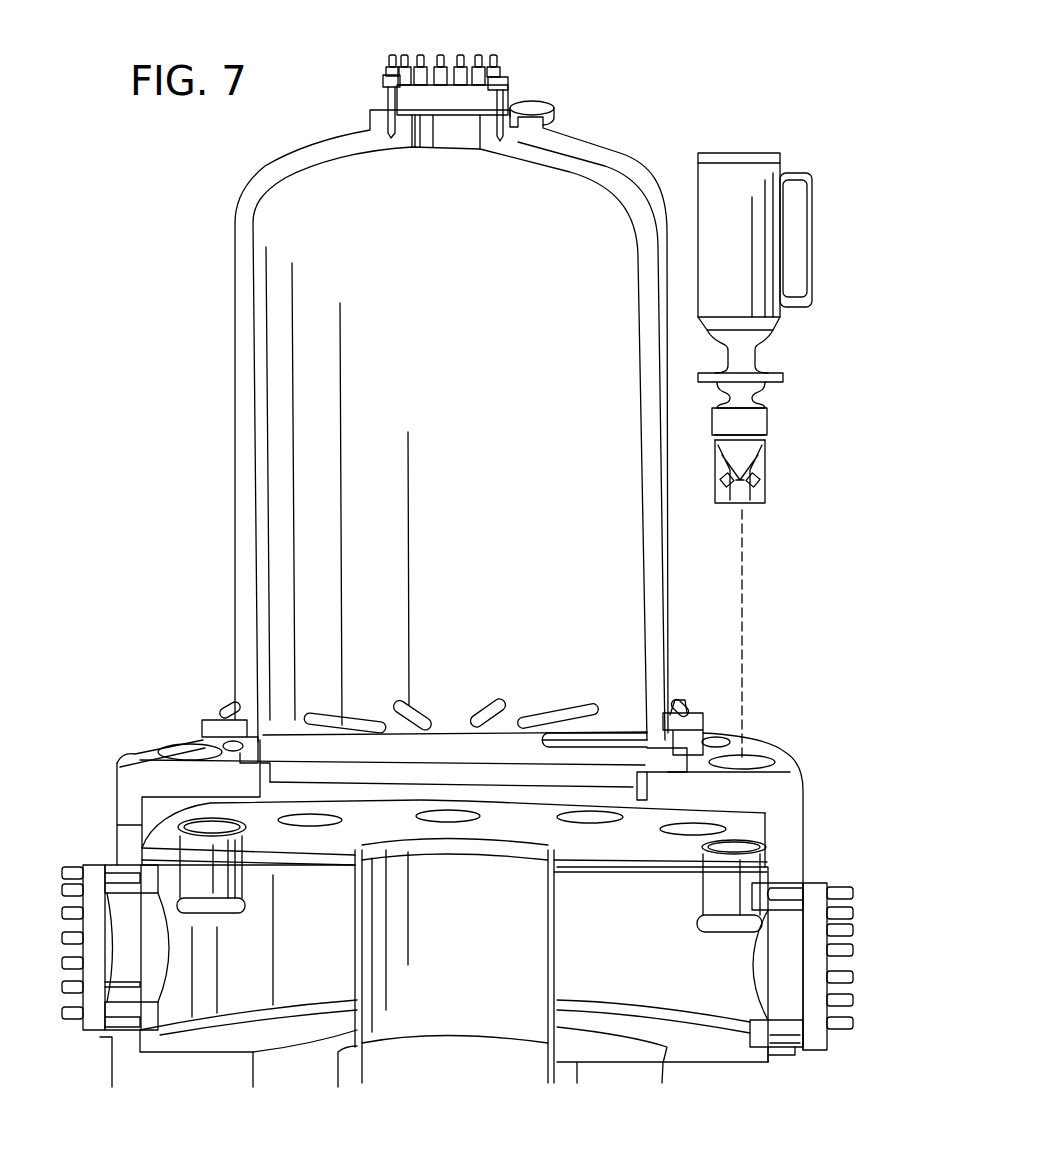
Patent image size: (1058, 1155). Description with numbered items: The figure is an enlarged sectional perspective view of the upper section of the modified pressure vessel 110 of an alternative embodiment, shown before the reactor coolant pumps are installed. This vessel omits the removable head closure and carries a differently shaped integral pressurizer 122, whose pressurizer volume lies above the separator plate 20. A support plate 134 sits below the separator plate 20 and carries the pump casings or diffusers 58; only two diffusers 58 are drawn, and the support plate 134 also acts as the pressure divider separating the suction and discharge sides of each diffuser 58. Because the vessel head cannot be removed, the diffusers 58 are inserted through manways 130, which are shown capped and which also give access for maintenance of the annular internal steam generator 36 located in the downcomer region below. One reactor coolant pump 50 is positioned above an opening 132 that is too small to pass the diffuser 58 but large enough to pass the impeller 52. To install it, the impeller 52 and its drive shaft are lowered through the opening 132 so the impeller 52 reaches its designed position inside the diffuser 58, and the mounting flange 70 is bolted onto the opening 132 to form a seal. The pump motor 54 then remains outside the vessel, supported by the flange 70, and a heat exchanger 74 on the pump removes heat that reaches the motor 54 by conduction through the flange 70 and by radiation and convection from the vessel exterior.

The separator plate 20 is at (458, 747).
The internal steam generator 36 is at (587, 1038).
The reactor coolant pump 50 is at (748, 100).
The impeller 52 is at (765, 483).
The pump motor 54 is at (732, 200).
The pump casing or diffuser 58 is at (240, 883).
The mounting flange 70 is at (777, 370).
The heat exchanger 74 is at (812, 262).
The pressure vessel 110 is at (112, 1050).
The integral pressurizer 122 is at (235, 223).
The manway 130 is at (85, 865).
The opening 132 is at (183, 747).
The support plate 134 is at (593, 867).